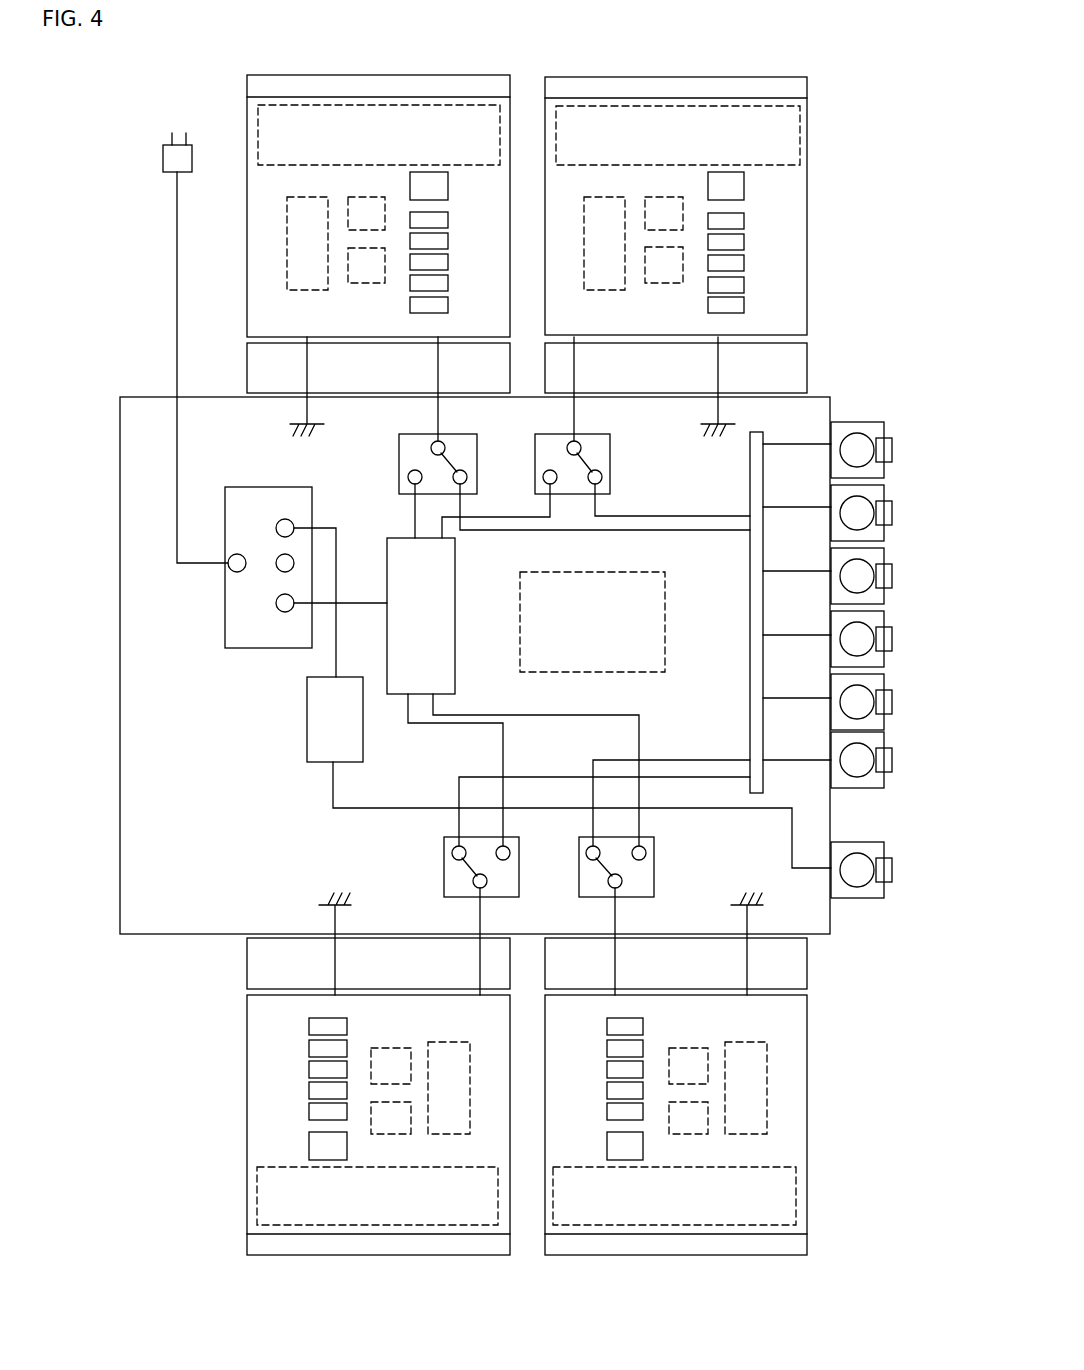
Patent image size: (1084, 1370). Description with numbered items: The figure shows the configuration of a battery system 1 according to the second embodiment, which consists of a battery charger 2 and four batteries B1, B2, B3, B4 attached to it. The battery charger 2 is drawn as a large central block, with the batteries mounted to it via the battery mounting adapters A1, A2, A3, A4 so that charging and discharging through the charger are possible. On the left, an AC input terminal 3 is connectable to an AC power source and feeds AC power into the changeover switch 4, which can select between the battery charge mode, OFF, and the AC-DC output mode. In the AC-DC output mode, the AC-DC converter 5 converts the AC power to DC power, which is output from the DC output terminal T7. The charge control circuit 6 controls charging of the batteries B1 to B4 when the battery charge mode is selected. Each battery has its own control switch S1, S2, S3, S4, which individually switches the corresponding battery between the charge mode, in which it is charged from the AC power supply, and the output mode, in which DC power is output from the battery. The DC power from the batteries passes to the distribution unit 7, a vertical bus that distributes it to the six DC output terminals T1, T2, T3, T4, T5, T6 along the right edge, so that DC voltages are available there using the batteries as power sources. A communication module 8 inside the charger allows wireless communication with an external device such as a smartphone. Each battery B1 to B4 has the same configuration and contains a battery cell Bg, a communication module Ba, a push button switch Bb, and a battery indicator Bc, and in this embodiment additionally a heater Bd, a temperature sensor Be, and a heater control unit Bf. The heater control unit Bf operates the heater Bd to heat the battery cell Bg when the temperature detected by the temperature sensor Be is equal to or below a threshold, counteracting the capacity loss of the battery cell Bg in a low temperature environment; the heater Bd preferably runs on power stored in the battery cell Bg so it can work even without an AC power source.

The battery system 1 is at (882, 119).
The battery charger 2 is at (197, 867).
The AC input terminal 3 is at (163, 157).
The changeover switch 4 is at (225, 612).
The AC-DC converter 5 is at (341, 734).
The charge control circuit 6 is at (428, 634).
The distribution unit 7 is at (750, 672).
The communication module 8 is at (600, 634).
The battery mounting adapter A1 is at (395, 379).
The battery mounting adapter A2 is at (673, 379).
The battery mounting adapter A3 is at (412, 978).
The battery mounting adapter A4 is at (695, 978).
The battery B1 is at (391, 52).
The battery B2 is at (649, 52).
The battery B3 is at (333, 1266).
The battery B4 is at (653, 1266).
The communication module Ba is at (322, 253).
The push button switch Bb is at (444, 197).
The battery indicator Bc is at (460, 257).
The heater Bd is at (425, 77).
The temperature sensor Be is at (381, 225).
The heater control unit Bf is at (379, 278).
The battery cell Bg is at (382, 145).
The control switch S1 is at (399, 481).
The control switch S2 is at (610, 481).
The control switch S3 is at (444, 880).
The control switch S4 is at (654, 884).
The DC output terminal T1 is at (884, 431).
The DC output terminal T2 is at (884, 494).
The DC output terminal T3 is at (884, 557).
The DC output terminal T4 is at (884, 620).
The DC output terminal T5 is at (884, 683).
The DC output terminal T6 is at (884, 741).
The DC output terminal T7 is at (884, 851).